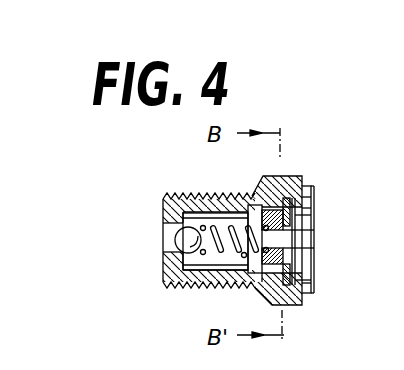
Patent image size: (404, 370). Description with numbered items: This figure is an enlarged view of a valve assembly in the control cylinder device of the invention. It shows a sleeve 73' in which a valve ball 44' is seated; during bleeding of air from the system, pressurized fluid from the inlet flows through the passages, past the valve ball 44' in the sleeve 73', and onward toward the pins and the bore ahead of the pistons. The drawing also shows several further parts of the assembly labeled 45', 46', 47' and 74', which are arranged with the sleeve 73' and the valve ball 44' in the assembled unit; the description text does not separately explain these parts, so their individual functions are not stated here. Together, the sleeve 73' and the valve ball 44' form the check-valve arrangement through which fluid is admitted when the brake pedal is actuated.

The valve ball 44' is at (152, 254).
The valve insert sleeve 45' is at (233, 275).
The seal membrane 46' is at (351, 239).
The flange plate 47' is at (347, 225).
The sleeve 73' is at (261, 215).
The chamfered outlet end 74' is at (308, 320).